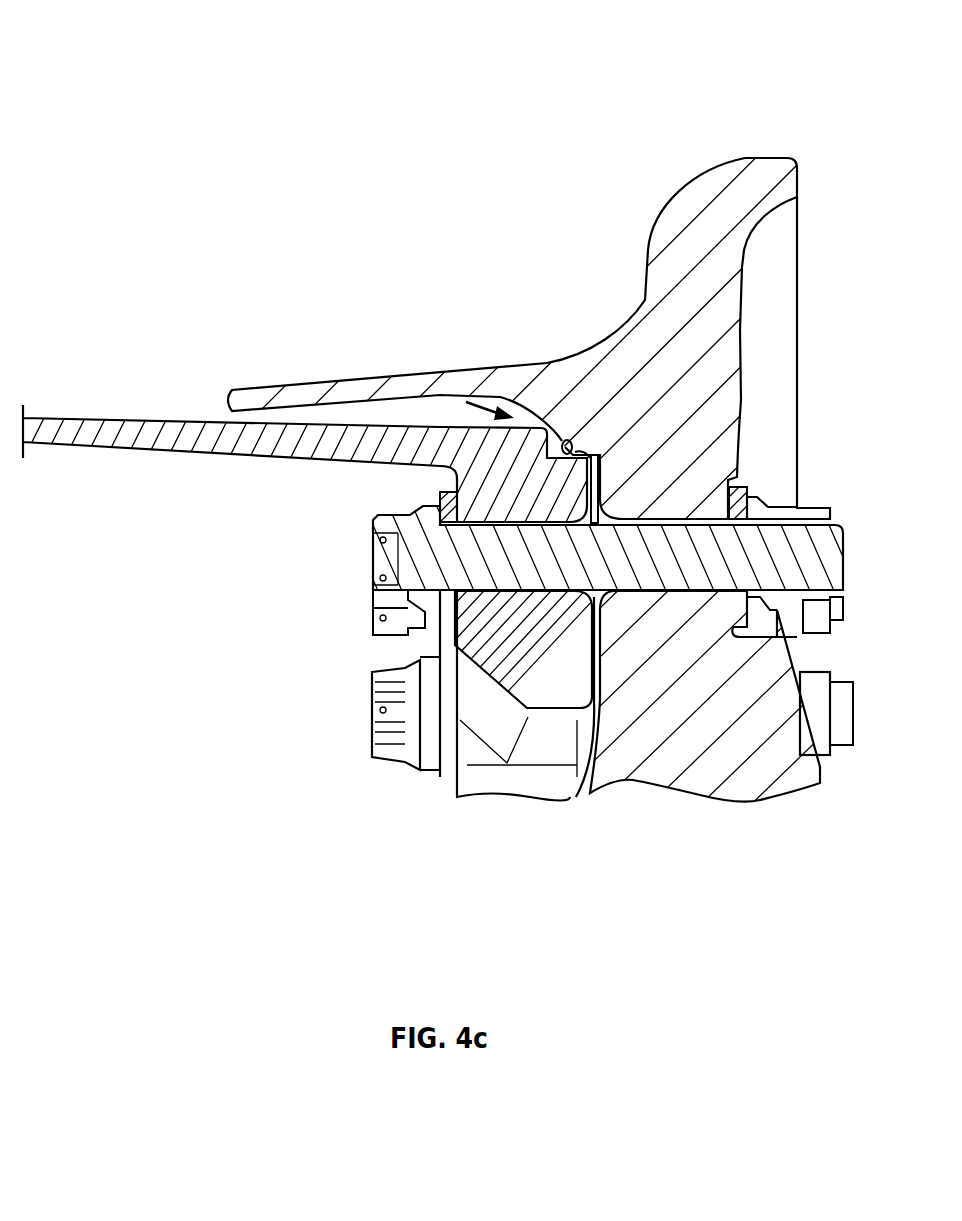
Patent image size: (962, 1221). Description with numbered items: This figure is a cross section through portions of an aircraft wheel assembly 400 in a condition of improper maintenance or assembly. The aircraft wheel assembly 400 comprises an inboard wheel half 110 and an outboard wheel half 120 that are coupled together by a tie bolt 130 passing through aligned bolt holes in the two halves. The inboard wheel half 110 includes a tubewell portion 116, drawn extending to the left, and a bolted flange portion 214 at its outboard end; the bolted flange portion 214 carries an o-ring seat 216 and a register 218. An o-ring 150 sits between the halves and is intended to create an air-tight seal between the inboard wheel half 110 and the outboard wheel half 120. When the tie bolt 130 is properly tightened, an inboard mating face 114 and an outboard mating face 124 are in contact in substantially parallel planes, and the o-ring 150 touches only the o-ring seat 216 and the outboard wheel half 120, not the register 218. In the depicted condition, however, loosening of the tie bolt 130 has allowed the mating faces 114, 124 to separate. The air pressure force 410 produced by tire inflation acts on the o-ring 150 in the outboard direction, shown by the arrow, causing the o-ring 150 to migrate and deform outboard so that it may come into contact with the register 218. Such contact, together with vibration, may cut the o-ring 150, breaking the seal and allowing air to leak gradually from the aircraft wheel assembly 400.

The aircraft wheel assembly 400 is at (198, 152).
The inboard wheel half 110 is at (43, 498).
The tubewell portion 116 is at (110, 437).
The inboard mating face 114 is at (580, 497).
The outboard wheel half 120 is at (697, 200).
The o-ring seat 216 is at (583, 460).
The o-ring 150 is at (568, 441).
The air pressure force 410 is at (483, 400).
The register 218 is at (600, 473).
The outboard mating face 124 is at (598, 488).
The tie bolt 130 is at (437, 552).
The bolted flange portion 214 is at (507, 645).